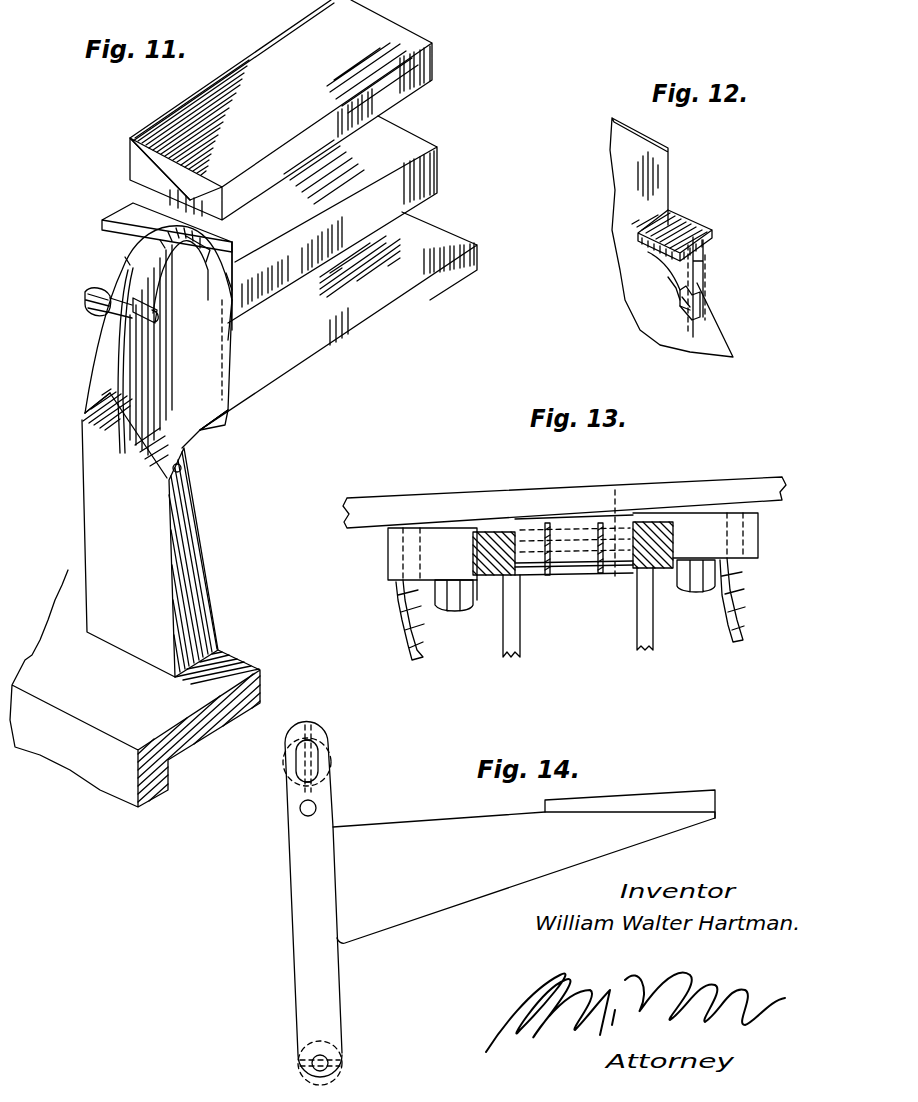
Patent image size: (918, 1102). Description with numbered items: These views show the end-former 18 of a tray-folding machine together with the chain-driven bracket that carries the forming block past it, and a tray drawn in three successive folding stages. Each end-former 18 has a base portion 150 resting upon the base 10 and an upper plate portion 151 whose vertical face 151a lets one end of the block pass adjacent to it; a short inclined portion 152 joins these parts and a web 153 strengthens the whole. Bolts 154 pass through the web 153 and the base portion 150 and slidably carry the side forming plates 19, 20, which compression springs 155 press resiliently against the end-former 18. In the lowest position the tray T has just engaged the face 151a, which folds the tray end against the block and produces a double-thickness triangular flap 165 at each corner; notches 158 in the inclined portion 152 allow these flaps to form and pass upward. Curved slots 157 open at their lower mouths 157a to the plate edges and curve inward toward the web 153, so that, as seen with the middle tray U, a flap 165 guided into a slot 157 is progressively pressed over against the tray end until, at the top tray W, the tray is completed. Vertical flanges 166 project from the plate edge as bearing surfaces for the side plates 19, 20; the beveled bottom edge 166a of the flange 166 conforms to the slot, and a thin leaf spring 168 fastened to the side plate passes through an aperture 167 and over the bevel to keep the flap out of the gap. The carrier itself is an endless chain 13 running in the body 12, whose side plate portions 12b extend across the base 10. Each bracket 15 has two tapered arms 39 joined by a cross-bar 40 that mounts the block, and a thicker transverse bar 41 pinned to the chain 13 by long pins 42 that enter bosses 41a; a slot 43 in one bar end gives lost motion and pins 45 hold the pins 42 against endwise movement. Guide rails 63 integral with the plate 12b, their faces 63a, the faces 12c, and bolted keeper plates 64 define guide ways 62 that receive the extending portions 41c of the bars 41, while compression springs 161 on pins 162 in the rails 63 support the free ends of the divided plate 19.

In FIG. 11, the tray W is at (385, 30).
In FIG. 11, the tray U is at (440, 163).
In FIG. 11, the tray T is at (397, 297).
In FIG. 11, the base 10 is at (135, 688).
In FIG. 13, the body 12 is at (371, 497).
In FIG. 13, the side plate portions 12b is at (582, 498).
In FIG. 13, the faces of plate 12b 12c is at (476, 532).
In FIG. 13, the endless chain 13 is at (545, 570).
In FIG. 14, the bracket 15 is at (402, 826).
In FIG. 11, the end-former 18 is at (208, 482).
In FIG. 12, the end-former 18 is at (701, 222).
In FIG. 11, the side forming plate 19 is at (105, 330).
In FIG. 12, the side forming plate 20 is at (655, 172).
In FIG. 13, the tapered arms 39 is at (512, 655).
In FIG. 14, the tapered arms 39 is at (524, 877).
In FIG. 14, the cross-bar 40 is at (665, 795).
In FIG. 13, the transverse bar 41 is at (517, 578).
In FIG. 14, the transverse bar 41 is at (290, 948).
In FIG. 13, the bosses 41a is at (573, 576).
In FIG. 14, the bosses 41a is at (292, 745).
In FIG. 13, the portions of bars 41 41c is at (488, 577).
In FIG. 14, the portions of bars 41 41c is at (310, 903).
In FIG. 13, the pins 42 is at (615, 490).
In FIG. 14, the pins 42 is at (313, 750).
In FIG. 14, the slot 43 is at (298, 768).
In FIG. 13, the pins 45 is at (670, 506).
In FIG. 14, the pins 45 is at (318, 770).
In FIG. 13, the guide ways 62 is at (480, 582).
In FIG. 13, the guide rails 63 is at (432, 540).
In FIG. 13, the faces of rails 63 63a is at (473, 550).
In FIG. 13, the keeper plates 64 is at (455, 595).
In FIG. 11, the base portion 150 is at (205, 582).
In FIG. 11, the plate portion 151 is at (245, 360).
In FIG. 12, the plate portion 151 is at (648, 252).
In FIG. 11, the vertical face 151a is at (239, 240).
In FIG. 11, the inclined portion 152 is at (195, 425).
In FIG. 11, the web 153 is at (128, 365).
In FIG. 11, the bolts 154 is at (150, 315).
In FIG. 11, the compression springs 155 is at (100, 302).
In FIG. 11, the curved slots 157 is at (210, 250).
In FIG. 11, the slot mouth 157a is at (265, 335).
In FIG. 11, the notches 158 is at (108, 425).
In FIG. 13, the compression springs 161 is at (400, 620).
In FIG. 13, the pins 162 is at (410, 655).
In FIG. 11, the triangular flap 165 is at (143, 172).
In FIG. 11, the vertical flanges 166 is at (125, 257).
In FIG. 12, the vertical flanges 166 is at (700, 258).
In FIG. 12, the bottom edge 166a is at (682, 297).
In FIG. 12, the aperture 167 is at (690, 310).
In FIG. 12, the leaf spring 168 is at (700, 313).